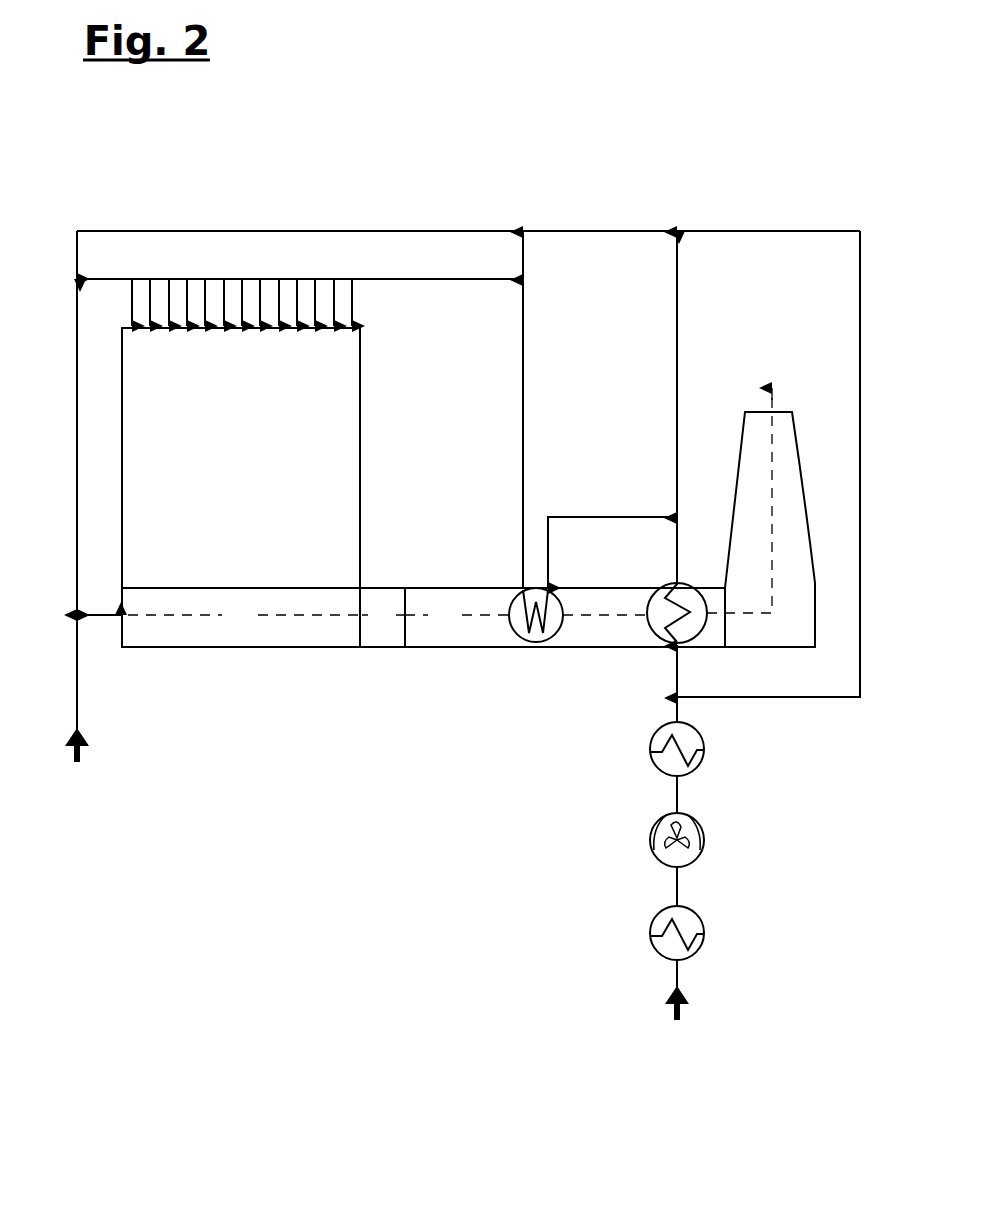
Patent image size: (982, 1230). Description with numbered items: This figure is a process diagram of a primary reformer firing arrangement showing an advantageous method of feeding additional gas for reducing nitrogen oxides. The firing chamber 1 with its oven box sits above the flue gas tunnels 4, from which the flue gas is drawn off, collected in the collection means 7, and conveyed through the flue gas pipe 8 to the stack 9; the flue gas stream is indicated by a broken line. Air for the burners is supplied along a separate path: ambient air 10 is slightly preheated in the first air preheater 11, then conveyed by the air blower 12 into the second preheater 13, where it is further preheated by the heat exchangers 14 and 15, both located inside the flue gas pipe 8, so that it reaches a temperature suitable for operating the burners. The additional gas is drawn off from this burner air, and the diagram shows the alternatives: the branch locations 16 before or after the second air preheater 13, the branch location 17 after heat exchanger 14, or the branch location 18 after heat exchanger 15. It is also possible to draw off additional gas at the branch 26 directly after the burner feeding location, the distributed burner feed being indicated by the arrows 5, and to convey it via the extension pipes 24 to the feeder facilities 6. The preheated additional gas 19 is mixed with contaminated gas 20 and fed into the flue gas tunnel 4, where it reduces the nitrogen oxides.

The firing chamber 1 is at (241, 458).
The flue gas tunnels 4 is at (241, 617).
The air outlets 5 is at (352, 298).
The feeder facilities 6 is at (120, 612).
The collection means 7 is at (382, 617).
The flue gas pipe 8 is at (565, 617).
The stack 9 is at (790, 448).
The ambient air 10 is at (677, 1024).
The first air preheater 11 is at (651, 933).
The air blower 12 is at (650, 840).
The second preheater 13 is at (651, 749).
The heat exchanger 14 is at (660, 590).
The heat exchanger 15 is at (515, 598).
The branch locations 16 is at (677, 697).
The branch location 17 is at (677, 517).
The branch location 18 is at (527, 279).
The preheated additional gas 19 is at (497, 231).
The contaminated gas 20 is at (76, 770).
The extension pipes 24 is at (76, 412).
The branch 26 is at (134, 288).